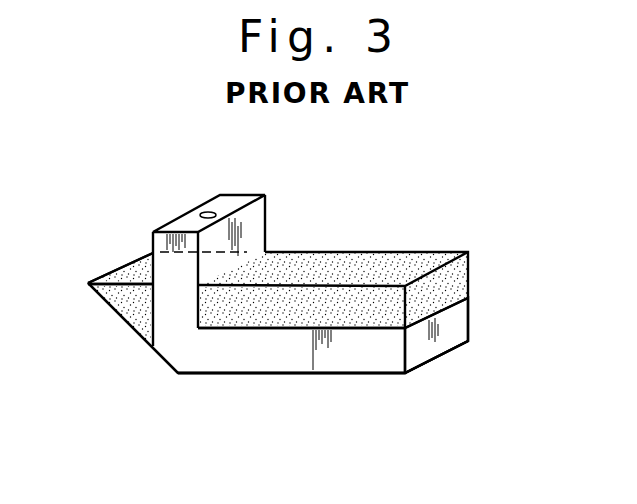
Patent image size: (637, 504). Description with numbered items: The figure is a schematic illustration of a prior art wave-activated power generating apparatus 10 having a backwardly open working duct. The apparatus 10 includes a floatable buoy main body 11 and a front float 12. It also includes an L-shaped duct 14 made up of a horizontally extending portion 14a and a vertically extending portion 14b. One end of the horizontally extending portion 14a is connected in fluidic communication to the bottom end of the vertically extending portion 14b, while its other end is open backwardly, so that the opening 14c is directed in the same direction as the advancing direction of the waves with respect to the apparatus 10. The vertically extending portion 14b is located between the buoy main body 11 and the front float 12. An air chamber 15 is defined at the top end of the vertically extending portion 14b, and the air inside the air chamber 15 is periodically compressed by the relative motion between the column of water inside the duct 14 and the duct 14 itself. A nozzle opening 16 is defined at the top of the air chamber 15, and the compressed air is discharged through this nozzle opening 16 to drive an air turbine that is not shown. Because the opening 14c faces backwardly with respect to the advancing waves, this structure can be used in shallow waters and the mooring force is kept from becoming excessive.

The wave-activated power generating apparatus 10 is at (436, 240).
The buoy main body 11 is at (373, 252).
The front float 12 is at (123, 263).
The L-shaped duct 14 is at (223, 374).
The horizontally extending portion 14a is at (340, 360).
The vertically extending portion 14b is at (162, 313).
The opening 14c is at (444, 323).
The air chamber 15 is at (257, 230).
The nozzle opening 16 is at (204, 211).